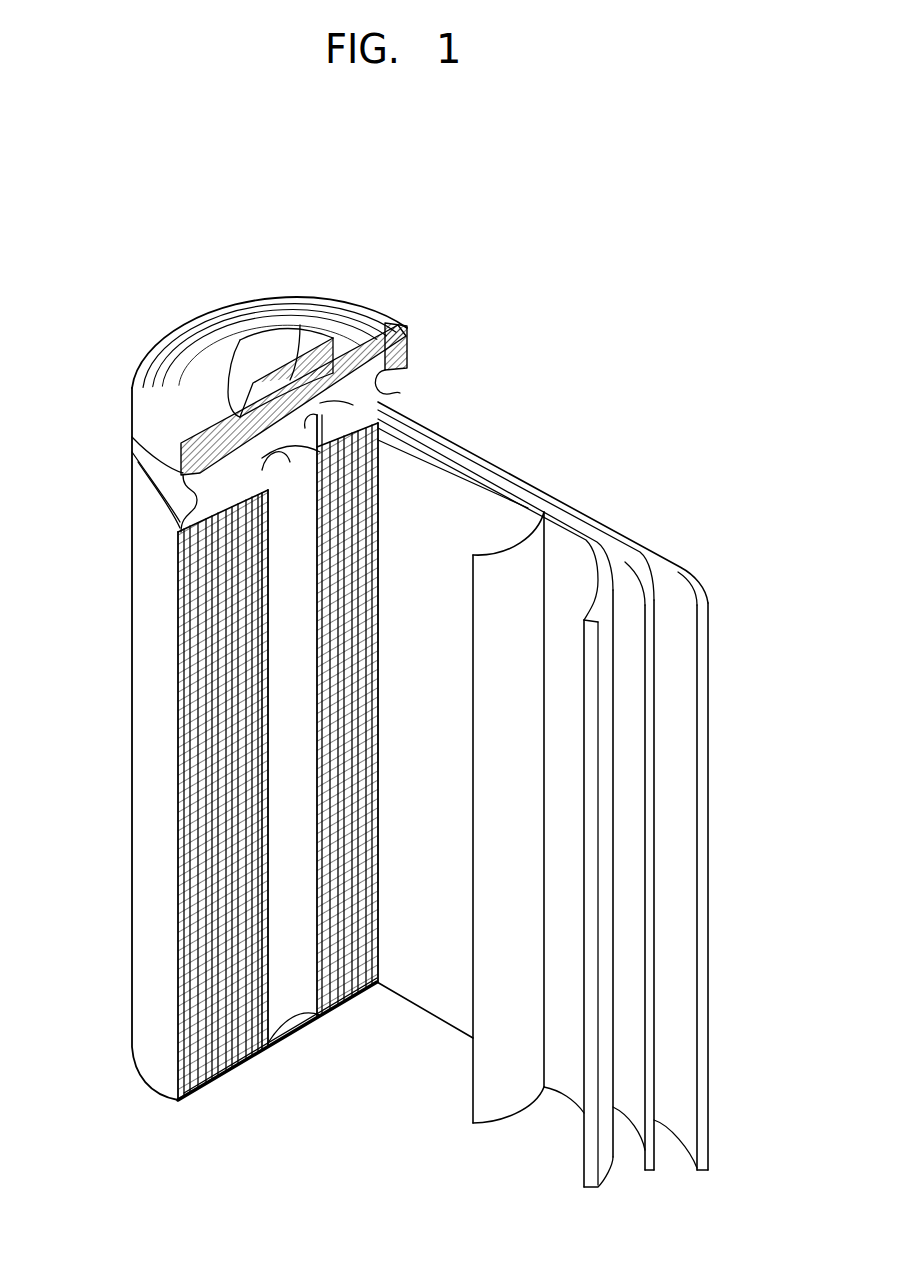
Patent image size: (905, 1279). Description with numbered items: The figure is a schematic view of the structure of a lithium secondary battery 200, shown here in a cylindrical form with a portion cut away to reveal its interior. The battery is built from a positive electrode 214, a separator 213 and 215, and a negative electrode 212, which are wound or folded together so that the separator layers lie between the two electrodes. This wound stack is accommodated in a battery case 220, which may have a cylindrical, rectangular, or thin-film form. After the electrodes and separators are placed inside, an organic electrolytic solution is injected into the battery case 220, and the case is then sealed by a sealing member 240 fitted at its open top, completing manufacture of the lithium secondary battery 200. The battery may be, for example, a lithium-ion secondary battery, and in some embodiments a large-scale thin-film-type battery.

The lithium secondary battery 200 is at (526, 357).
The negative electrode 212 is at (692, 580).
The separator 213 is at (633, 553).
The positive electrode 214 is at (573, 533).
The separator 215 is at (507, 550).
The battery case 220 is at (143, 751).
The sealing member 240 is at (263, 343).